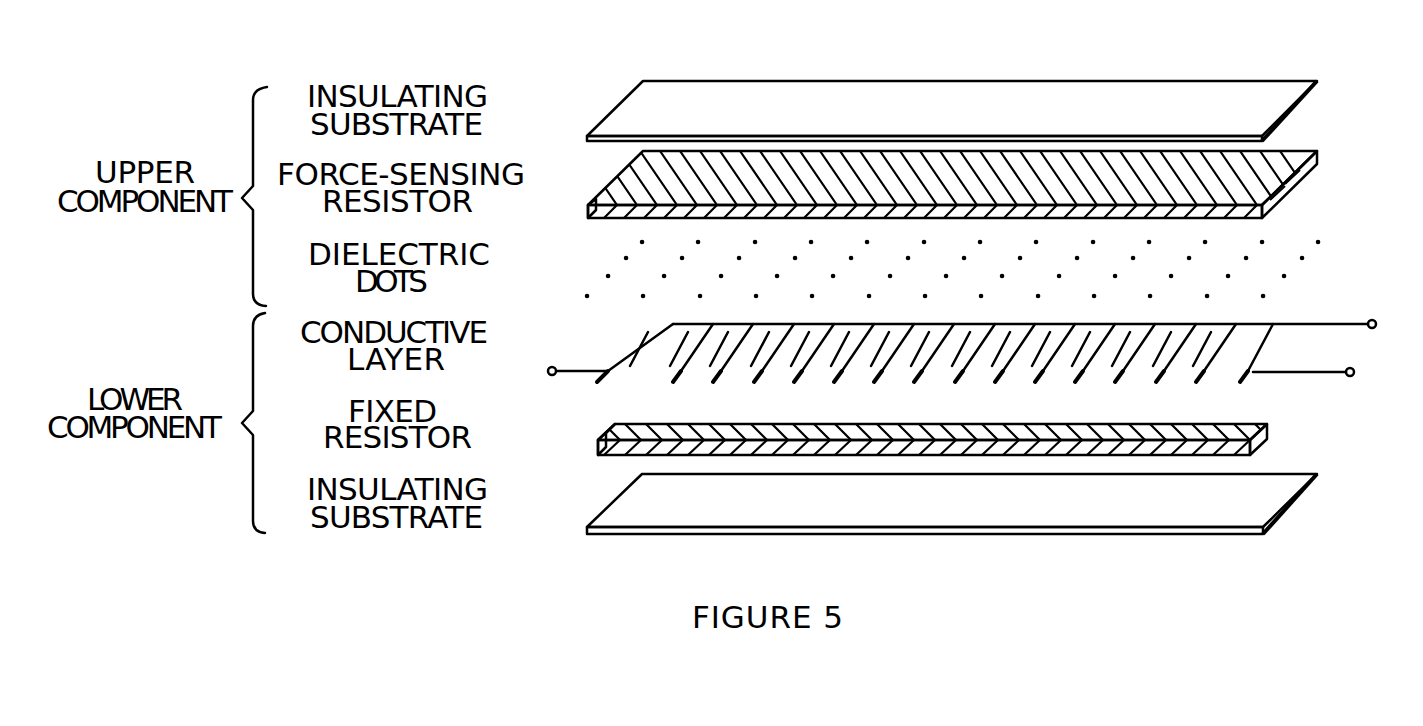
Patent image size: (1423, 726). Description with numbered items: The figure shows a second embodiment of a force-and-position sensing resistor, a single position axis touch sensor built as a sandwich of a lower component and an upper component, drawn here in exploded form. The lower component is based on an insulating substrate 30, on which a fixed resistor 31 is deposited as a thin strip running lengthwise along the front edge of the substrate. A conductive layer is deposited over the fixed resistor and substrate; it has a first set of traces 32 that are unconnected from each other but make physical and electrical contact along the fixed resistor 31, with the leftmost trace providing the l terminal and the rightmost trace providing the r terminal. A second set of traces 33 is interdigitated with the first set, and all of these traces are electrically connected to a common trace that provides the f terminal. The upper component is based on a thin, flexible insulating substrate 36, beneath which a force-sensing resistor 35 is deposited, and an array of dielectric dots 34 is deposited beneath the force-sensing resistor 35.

The insulating substrate 30 is at (1283, 498).
The fixed resistor 31 is at (1267, 435).
The first set of traces 32 is at (1203, 385).
The second set of traces 33 is at (963, 355).
The dielectric dots 34 is at (1318, 242).
The force-sensing resistor 35 is at (1290, 183).
The insulating substrate 36 is at (1283, 107).